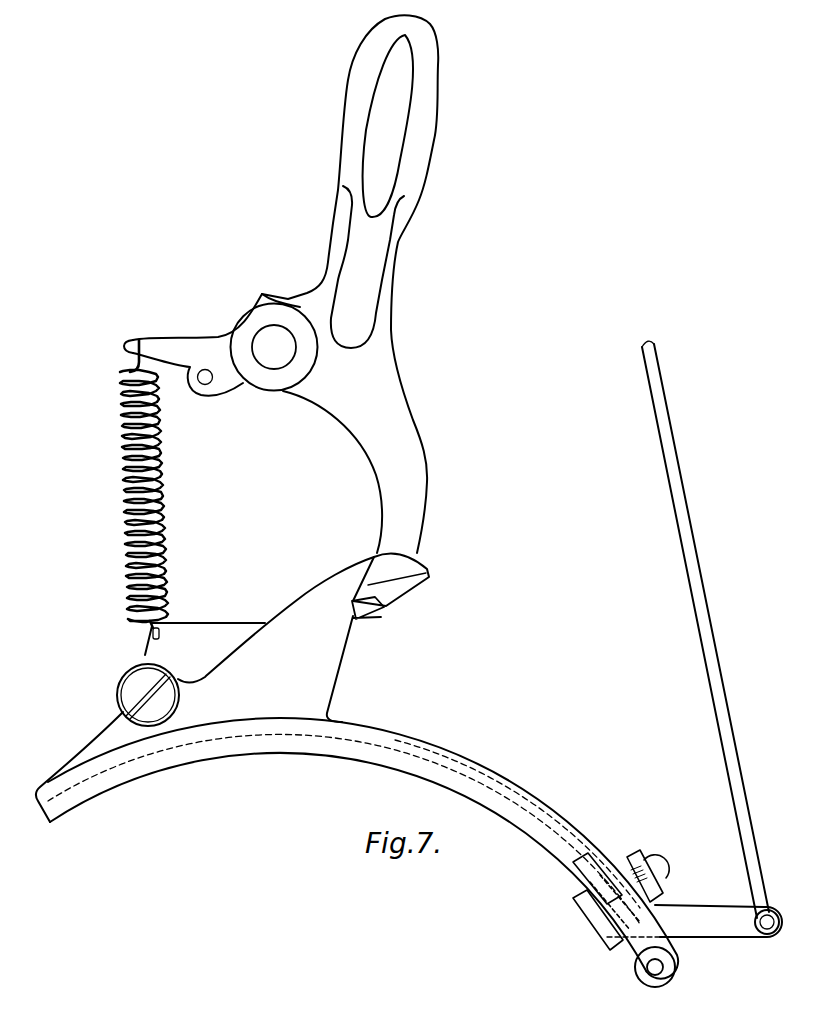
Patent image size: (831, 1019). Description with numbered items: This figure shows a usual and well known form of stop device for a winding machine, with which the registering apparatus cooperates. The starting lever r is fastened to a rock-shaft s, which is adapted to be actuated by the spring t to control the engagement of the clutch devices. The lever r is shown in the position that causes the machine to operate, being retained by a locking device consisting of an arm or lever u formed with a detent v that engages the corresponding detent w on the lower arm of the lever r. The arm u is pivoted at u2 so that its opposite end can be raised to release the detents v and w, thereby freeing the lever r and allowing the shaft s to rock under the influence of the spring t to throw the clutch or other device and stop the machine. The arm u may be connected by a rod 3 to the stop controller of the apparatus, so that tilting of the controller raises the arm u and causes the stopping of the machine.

The starting lever r is at (281, 284).
The rock-shaft s is at (274, 347).
The spring t is at (160, 476).
The arm or lever u is at (205, 689).
The pivot u2 is at (168, 700).
The detent w is at (390, 628).
The detent v is at (378, 619).
The rod 3 is at (706, 633).